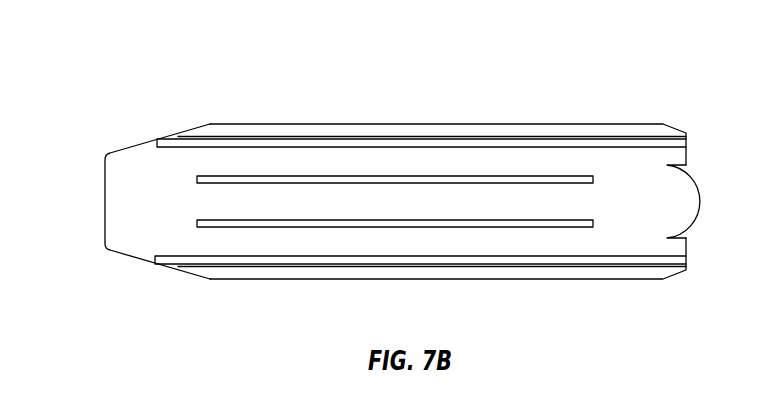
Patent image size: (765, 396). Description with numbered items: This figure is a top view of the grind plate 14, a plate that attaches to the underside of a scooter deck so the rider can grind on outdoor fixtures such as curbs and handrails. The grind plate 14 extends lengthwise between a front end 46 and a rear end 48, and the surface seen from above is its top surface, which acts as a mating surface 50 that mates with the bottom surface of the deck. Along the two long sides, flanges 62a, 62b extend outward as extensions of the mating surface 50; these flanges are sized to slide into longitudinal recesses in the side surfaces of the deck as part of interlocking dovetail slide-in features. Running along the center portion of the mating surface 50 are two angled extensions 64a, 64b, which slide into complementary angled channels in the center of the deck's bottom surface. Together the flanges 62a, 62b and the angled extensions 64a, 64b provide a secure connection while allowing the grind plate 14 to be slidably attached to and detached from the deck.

The grind plate 14 is at (187, 74).
The front end 46 is at (103, 200).
The rear end 48 is at (638, 201).
The mating surface 50 is at (427, 198).
The flange 62a is at (179, 136).
The flange 62b is at (179, 266).
The angled extension 64a is at (201, 188).
The angled extension 64b is at (201, 215).